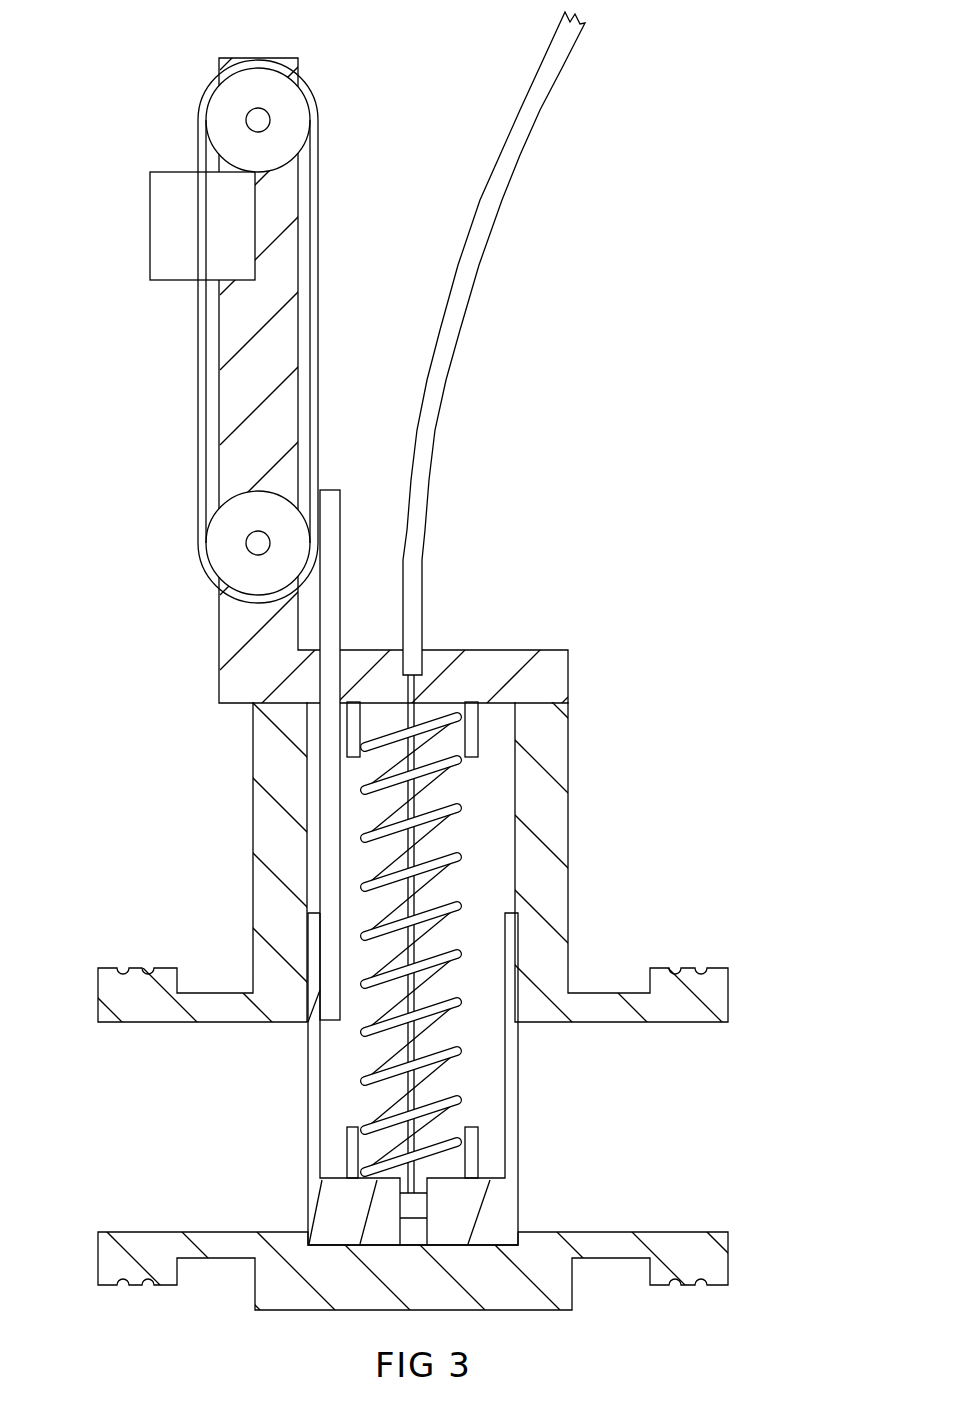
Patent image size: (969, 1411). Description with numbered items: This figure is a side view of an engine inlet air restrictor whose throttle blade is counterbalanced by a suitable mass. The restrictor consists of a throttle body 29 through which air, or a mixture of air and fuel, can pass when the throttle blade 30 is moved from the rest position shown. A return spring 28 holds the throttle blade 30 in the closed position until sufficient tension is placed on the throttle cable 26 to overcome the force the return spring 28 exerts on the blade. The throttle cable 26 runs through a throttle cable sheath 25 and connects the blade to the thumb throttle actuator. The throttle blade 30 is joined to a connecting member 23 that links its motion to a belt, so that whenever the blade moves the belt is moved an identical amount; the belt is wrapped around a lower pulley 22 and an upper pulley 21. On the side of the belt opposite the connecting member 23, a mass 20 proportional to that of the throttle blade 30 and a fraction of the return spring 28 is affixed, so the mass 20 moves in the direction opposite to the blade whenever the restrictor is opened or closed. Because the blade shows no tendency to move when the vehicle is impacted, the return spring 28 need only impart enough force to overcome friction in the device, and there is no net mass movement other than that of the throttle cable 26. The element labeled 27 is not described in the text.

The mass 20 is at (205, 225).
The upper pulley 21 is at (255, 119).
The lower pulley 22 is at (258, 541).
The connecting member 23 is at (327, 700).
The throttle cable sheath 25 is at (430, 440).
The throttle cable 26 is at (362, 746).
The top plate of bracket 27 is at (495, 675).
The return spring 28 is at (465, 862).
The throttle body 29 is at (548, 985).
The throttle blade 30 is at (492, 1212).